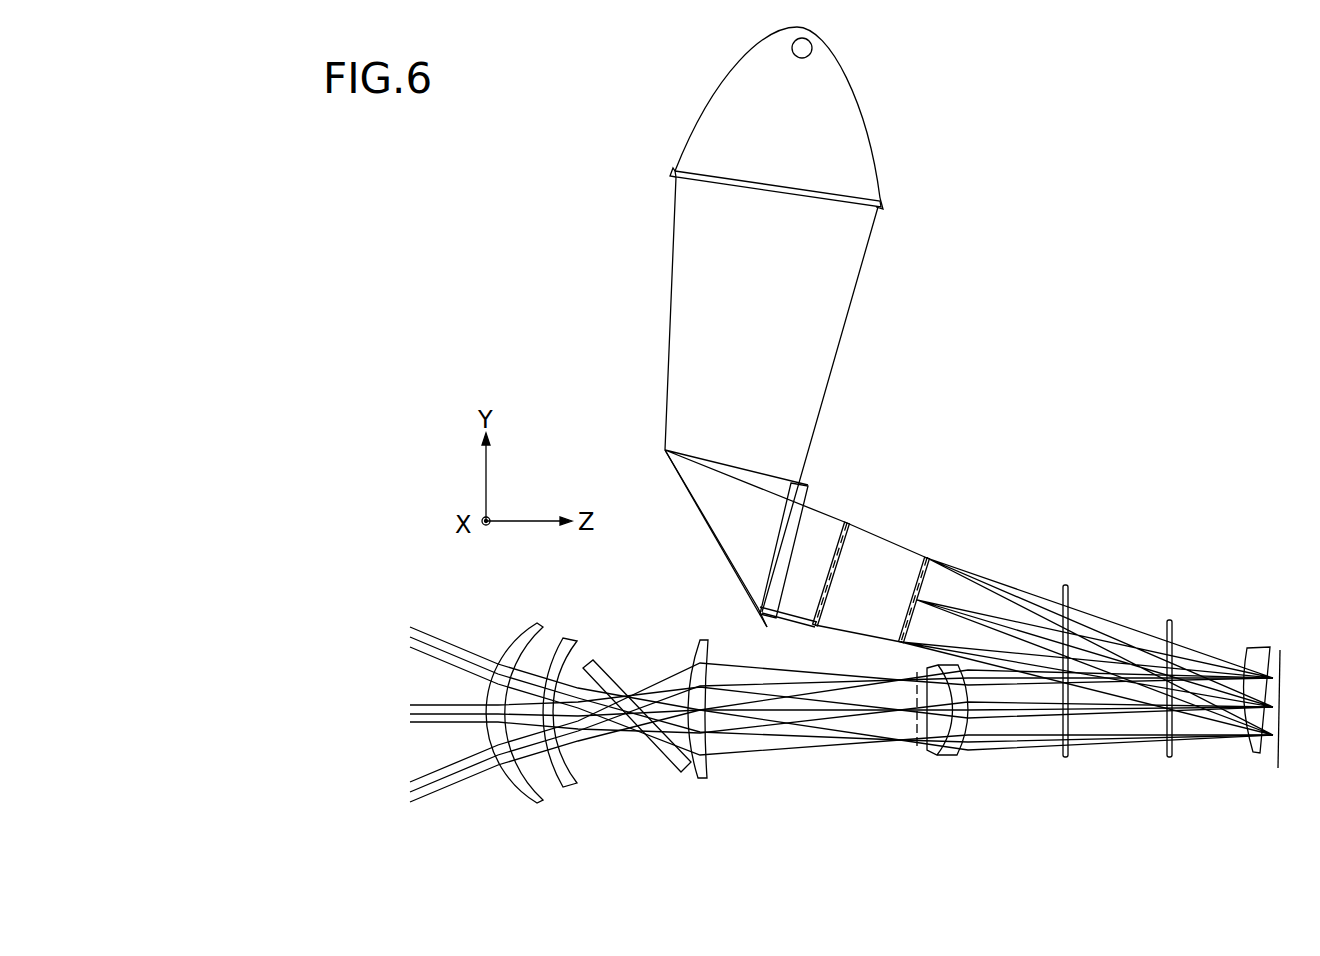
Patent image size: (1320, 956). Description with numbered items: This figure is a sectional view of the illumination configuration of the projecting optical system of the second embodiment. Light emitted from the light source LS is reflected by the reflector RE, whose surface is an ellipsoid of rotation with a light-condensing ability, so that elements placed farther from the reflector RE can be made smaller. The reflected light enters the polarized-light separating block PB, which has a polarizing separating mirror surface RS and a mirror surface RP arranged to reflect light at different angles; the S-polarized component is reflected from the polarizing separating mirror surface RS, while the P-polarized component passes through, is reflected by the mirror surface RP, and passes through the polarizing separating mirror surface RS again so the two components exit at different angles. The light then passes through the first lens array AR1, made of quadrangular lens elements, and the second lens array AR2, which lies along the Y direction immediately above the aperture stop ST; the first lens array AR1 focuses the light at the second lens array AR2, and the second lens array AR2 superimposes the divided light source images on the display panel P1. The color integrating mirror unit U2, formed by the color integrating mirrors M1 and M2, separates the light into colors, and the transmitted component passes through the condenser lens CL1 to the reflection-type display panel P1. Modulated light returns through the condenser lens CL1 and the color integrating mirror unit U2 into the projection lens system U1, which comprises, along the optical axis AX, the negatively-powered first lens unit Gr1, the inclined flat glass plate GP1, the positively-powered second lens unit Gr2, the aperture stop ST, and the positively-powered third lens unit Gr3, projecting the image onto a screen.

The light source LS is at (812, 47).
The reflector RE is at (880, 165).
The polarized-light separating block PB is at (808, 490).
The polarizing separating mirror surface RS is at (740, 577).
The mirror surface RP is at (745, 592).
The first lens array AR1 is at (848, 528).
The second lens array AR2 is at (928, 560).
The optical axis AX is at (432, 706).
The first lens unit Gr1 is at (582, 820).
The second lens unit Gr2 is at (718, 820).
The third lens unit Gr3 is at (978, 820).
The flat glass plate GP1 is at (686, 768).
The aperture stop ST is at (917, 751).
The projection lens system U1 is at (975, 855).
The color integrating mirror unit U2 is at (1195, 845).
The color integrating mirror M2 is at (1066, 757).
The color integrating mirror M1 is at (1169, 757).
The condenser lens CL1 is at (1256, 755).
The display panel P1 is at (1279, 768).